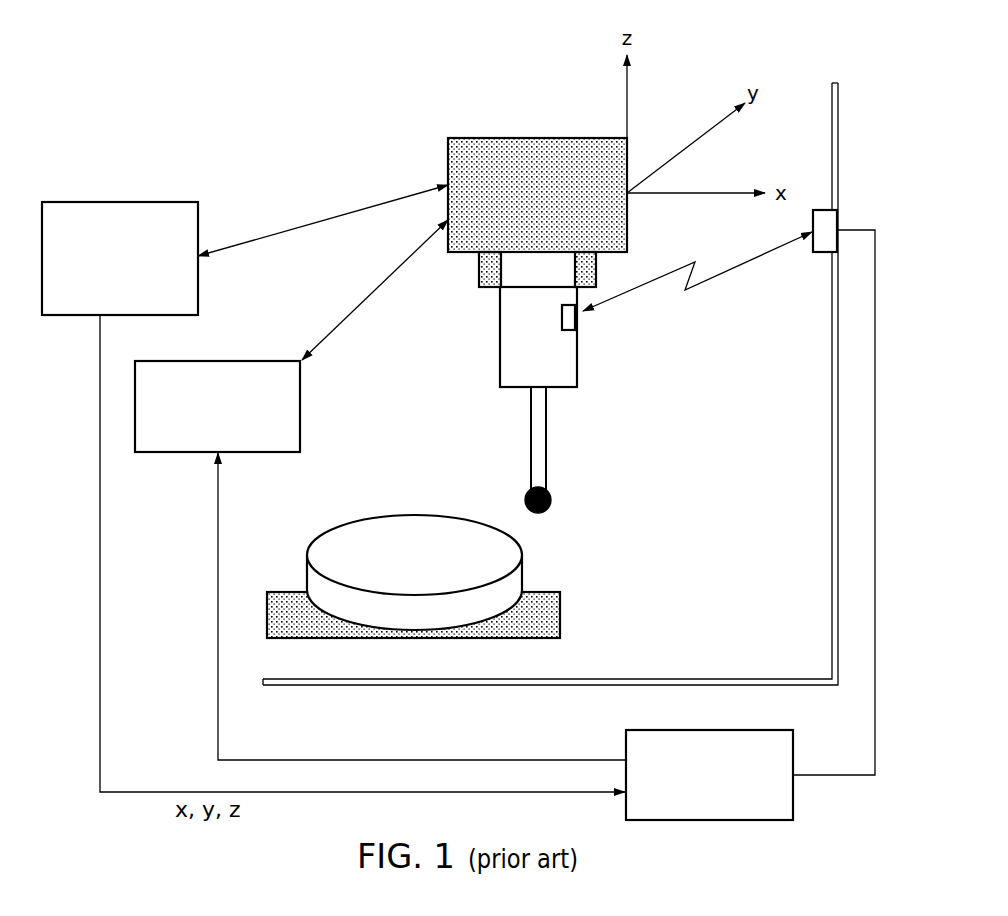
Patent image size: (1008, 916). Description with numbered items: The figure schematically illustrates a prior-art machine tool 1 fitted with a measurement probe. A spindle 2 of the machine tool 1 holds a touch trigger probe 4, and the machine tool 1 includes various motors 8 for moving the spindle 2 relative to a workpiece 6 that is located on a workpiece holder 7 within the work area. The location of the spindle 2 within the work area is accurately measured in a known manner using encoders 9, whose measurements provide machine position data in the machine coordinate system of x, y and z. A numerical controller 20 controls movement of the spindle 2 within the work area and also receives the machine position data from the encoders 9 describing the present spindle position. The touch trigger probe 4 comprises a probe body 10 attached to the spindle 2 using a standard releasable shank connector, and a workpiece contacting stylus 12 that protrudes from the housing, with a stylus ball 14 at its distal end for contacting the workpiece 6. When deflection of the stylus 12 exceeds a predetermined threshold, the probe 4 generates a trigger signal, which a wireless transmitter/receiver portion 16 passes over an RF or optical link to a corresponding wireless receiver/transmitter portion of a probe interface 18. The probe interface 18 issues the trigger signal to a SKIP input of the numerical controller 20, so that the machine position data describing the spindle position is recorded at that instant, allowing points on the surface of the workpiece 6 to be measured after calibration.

The machine tool 1 is at (838, 41).
The spindle 2 is at (540, 137).
The touch trigger probe 4 is at (537, 407).
The workpiece 6 is at (405, 562).
The workpiece holder 7 is at (560, 615).
The motors 8 is at (208, 419).
The encoders 9 is at (111, 270).
The probe body 10 is at (555, 352).
The stylus 12 is at (530, 433).
The stylus ball 14 is at (541, 513).
The wireless transmitter/receiver portion 16 is at (578, 323).
The probe interface 18 is at (836, 220).
The numerical controller 20 is at (693, 787).